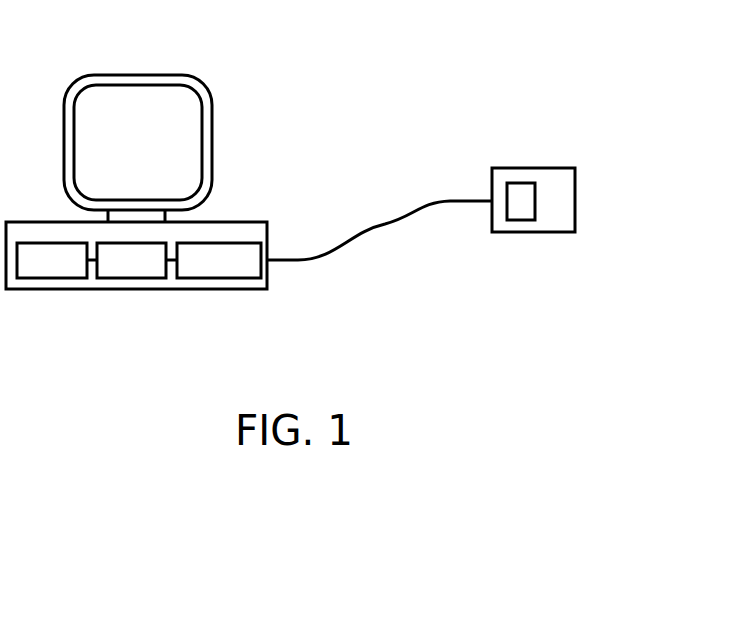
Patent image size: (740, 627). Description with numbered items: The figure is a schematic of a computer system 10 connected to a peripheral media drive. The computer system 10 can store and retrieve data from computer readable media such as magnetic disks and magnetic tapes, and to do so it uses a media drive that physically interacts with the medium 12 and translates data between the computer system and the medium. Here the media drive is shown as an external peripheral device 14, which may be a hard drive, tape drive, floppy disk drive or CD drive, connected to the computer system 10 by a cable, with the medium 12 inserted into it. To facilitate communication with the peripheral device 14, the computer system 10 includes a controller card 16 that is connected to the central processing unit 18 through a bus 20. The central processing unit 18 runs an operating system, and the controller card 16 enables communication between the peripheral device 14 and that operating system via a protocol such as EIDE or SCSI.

The computer system 10 is at (345, 61).
The medium 12 is at (517, 193).
The external peripheral device 14 is at (560, 166).
The controller card 16 is at (213, 278).
The central processing unit 18 is at (52, 278).
The bus 20 is at (133, 278).